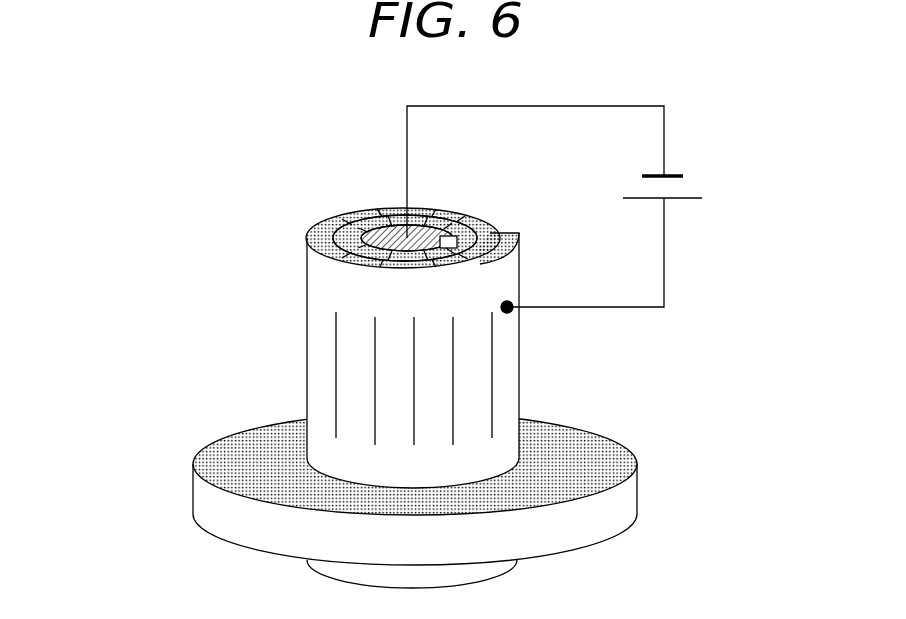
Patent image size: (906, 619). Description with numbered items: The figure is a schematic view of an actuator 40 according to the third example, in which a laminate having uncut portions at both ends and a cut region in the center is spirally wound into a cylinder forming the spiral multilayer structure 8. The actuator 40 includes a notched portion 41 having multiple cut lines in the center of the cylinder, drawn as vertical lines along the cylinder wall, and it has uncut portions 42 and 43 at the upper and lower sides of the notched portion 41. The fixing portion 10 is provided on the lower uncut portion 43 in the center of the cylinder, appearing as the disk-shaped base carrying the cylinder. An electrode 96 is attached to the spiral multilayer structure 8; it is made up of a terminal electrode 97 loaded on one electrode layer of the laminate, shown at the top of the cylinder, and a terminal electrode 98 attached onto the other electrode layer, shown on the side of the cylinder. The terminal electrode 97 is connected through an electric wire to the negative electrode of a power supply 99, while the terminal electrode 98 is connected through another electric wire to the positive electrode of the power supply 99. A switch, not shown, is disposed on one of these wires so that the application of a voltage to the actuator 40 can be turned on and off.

The actuator 40 is at (242, 137).
The spiral multilayer structure 8 is at (307, 358).
The fixing portion 10 is at (633, 489).
The notched portion 41 is at (638, 318).
The uncut portion 42 is at (265, 243).
The uncut portion 43 is at (158, 455).
The electrode 96 is at (633, 82).
The terminal electrode 97 is at (366, 212).
The terminal electrode 98 is at (518, 286).
The power supply 99 is at (687, 184).